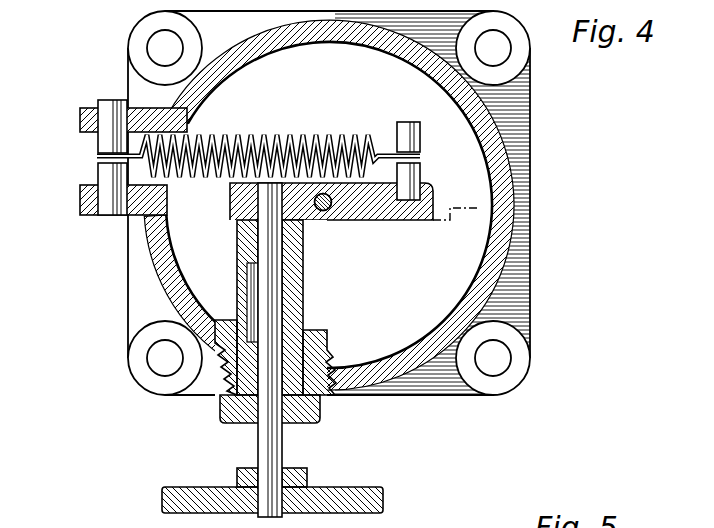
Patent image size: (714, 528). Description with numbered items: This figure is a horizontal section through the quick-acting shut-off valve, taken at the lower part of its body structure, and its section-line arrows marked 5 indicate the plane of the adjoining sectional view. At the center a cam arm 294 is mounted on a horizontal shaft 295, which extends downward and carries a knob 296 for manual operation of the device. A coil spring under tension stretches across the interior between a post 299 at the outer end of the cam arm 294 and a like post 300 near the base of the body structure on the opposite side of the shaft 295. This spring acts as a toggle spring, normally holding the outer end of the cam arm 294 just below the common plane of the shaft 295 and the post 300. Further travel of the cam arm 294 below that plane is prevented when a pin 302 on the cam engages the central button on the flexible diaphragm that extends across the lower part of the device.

The post 300 is at (110, 100).
The post 299 is at (420, 143).
The pin 302 is at (323, 212).
The cam arm 294 is at (385, 213).
The horizontal shaft 295 is at (270, 306).
The knob 296 is at (357, 486).
The section line 5- 5 is at (65, 162).